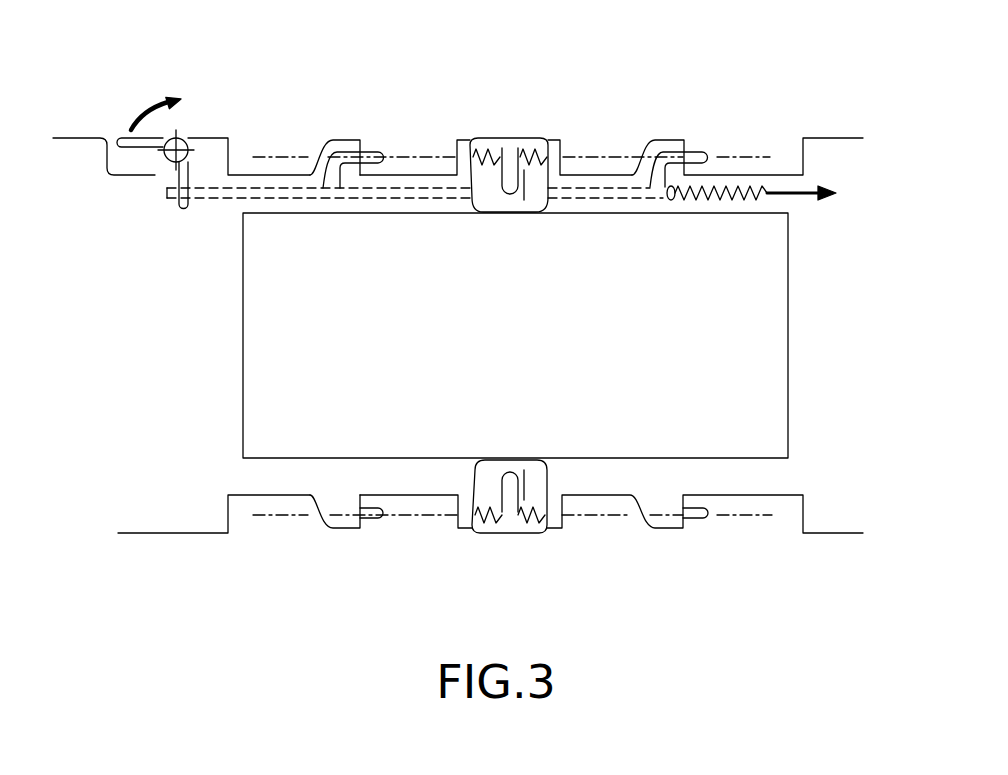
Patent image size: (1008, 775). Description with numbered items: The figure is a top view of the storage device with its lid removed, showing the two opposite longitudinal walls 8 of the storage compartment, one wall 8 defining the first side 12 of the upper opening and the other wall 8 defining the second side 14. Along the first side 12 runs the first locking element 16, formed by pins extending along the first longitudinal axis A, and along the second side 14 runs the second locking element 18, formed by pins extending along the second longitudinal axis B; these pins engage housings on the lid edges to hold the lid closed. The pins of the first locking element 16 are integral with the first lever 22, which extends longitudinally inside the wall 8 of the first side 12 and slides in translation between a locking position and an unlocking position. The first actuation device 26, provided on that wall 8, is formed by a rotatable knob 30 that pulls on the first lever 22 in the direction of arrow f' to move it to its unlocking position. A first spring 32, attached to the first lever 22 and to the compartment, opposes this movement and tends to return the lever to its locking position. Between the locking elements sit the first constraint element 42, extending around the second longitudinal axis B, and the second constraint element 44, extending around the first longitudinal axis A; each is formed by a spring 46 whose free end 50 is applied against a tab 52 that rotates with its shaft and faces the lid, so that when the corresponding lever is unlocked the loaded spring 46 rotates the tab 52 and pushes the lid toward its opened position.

The longitudinal wall 8 is at (243, 176).
The first side 12 is at (292, 170).
The second side 14 is at (290, 497).
The first locking element 16 is at (373, 149).
The second locking element 18 is at (373, 518).
The first lever 22 is at (223, 192).
The first actuation device 26 is at (123, 137).
The knob 30 is at (153, 139).
The first spring 32 is at (760, 193).
The first constraint element 42 is at (533, 490).
The second constraint element 44 is at (533, 178).
The spring 46 is at (492, 150).
The free end 50 is at (500, 193).
The tab 52 is at (535, 202).
The first longitudinal axis A is at (737, 157).
The second longitudinal axis B is at (738, 515).
The arrow f' is at (156, 81).